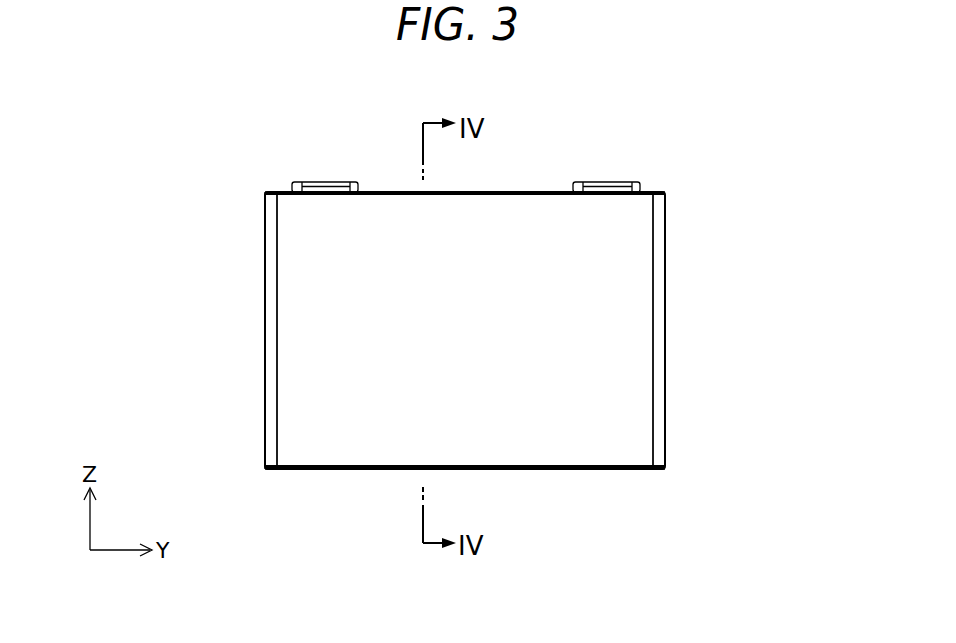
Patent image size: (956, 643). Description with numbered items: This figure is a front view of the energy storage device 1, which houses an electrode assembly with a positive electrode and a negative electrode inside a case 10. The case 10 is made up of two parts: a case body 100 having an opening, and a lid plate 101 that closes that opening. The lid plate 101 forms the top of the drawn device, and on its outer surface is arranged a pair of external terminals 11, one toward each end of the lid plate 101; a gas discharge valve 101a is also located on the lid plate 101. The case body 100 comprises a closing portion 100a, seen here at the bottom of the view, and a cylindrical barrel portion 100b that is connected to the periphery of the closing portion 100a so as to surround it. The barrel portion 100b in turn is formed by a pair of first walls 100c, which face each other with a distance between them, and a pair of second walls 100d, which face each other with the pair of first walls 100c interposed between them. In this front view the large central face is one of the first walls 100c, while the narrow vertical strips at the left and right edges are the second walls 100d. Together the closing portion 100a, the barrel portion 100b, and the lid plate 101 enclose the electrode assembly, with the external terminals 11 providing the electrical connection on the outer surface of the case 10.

The energy storage device 1 is at (225, 190).
The case 10 is at (772, 162).
The external terminals 11 is at (323, 182).
The case body 100 is at (668, 258).
The closing portion 100a is at (365, 470).
The barrel portion 100b is at (155, 300).
The first walls 100c is at (305, 345).
The second walls 100d is at (265, 305).
The lid plate 101 is at (655, 190).
The gas discharge valve 101a is at (467, 192).